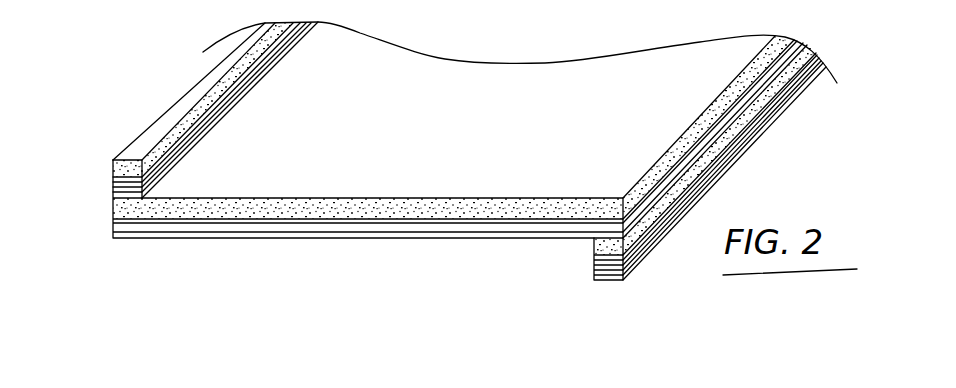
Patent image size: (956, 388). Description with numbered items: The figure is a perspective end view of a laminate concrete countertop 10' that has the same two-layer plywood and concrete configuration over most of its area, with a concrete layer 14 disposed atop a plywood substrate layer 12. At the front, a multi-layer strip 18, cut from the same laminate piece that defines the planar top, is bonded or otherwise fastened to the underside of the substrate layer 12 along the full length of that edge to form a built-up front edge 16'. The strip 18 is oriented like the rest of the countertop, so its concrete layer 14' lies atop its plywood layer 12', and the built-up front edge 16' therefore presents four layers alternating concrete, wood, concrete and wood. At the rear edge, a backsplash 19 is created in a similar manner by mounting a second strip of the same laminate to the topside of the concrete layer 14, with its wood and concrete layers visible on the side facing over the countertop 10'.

The countertop 10' is at (435, 165).
The substrate layer 12 is at (715, 149).
The plywood layer of the strip 12' is at (724, 184).
The concrete layer 14 is at (718, 172).
The concrete layer of the strip 14' is at (732, 160).
The built-up front edge 16' is at (730, 132).
The multi-layer strip 18 is at (712, 170).
The backsplash 19 is at (144, 132).